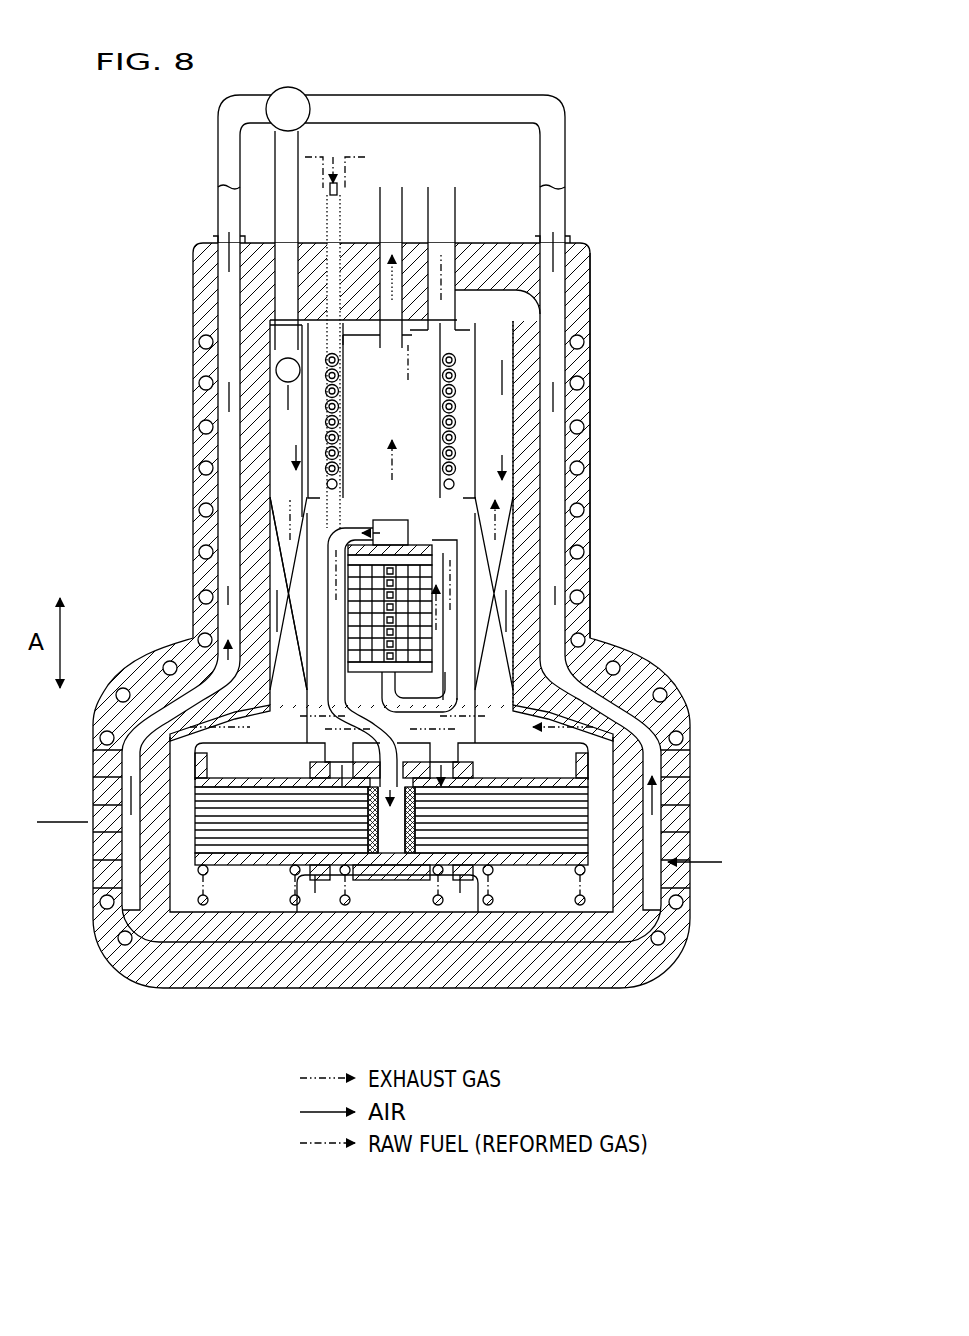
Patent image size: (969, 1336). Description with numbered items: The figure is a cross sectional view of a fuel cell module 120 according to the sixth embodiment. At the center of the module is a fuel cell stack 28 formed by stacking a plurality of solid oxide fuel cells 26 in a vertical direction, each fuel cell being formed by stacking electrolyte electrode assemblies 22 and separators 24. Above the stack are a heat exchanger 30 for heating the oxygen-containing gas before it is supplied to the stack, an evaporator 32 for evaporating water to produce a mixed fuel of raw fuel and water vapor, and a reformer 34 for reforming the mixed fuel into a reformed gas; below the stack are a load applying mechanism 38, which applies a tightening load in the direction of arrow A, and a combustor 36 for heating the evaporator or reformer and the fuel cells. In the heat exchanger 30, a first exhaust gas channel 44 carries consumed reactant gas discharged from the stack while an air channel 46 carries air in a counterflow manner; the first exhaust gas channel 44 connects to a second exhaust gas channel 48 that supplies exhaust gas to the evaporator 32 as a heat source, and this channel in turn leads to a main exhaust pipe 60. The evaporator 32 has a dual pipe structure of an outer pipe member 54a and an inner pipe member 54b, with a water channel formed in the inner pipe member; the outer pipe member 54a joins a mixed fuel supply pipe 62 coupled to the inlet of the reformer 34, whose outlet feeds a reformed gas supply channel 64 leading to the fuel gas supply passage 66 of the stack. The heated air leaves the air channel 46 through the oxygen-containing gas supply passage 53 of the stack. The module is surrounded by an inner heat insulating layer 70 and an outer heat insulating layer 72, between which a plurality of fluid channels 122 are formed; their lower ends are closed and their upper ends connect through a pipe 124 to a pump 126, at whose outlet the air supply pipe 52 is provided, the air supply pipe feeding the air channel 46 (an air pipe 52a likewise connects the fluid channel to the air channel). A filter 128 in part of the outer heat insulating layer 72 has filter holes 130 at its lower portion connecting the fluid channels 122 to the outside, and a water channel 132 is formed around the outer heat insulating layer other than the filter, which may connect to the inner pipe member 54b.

The fuel cell module 120 is at (681, 157).
The fluid channels 122 is at (230, 450).
The pipe 124 is at (432, 96).
The pump 126 is at (288, 88).
The filter 128 is at (92, 905).
The filter holes 130 is at (92, 790).
The water channel 132 is at (199, 383).
The electrolyte electrode assemblies 22 is at (560, 835).
The separators 24 is at (560, 802).
The solid oxide fuel cells 26 is at (490, 845).
The fuel cell stack 28 is at (587, 778).
The heat exchanger 30 is at (517, 578).
The evaporator 32 is at (347, 403).
The reformer 34 is at (389, 538).
The combustor 36 is at (342, 893).
The load applying mechanism 38 is at (513, 870).
The first exhaust gas channel 44 is at (237, 630).
The air channel 46 is at (275, 605).
The second exhaust gas channel 48 is at (258, 497).
The air supply pipe 52 is at (285, 195).
The air pipe 52a is at (287, 312).
The oxygen-containing gas supply passage 53 is at (345, 865).
The outer pipe member 54a is at (340, 207).
The inner pipe member 54b is at (345, 185).
The main exhaust pipe 60 is at (457, 205).
The mixed fuel supply pipe 62 is at (447, 603).
The reformed gas supply channel 64 is at (327, 557).
The fuel gas supply passage 66 is at (398, 870).
The inner heat insulating layer 70 is at (537, 462).
The outer heat insulating layer 72 is at (578, 415).